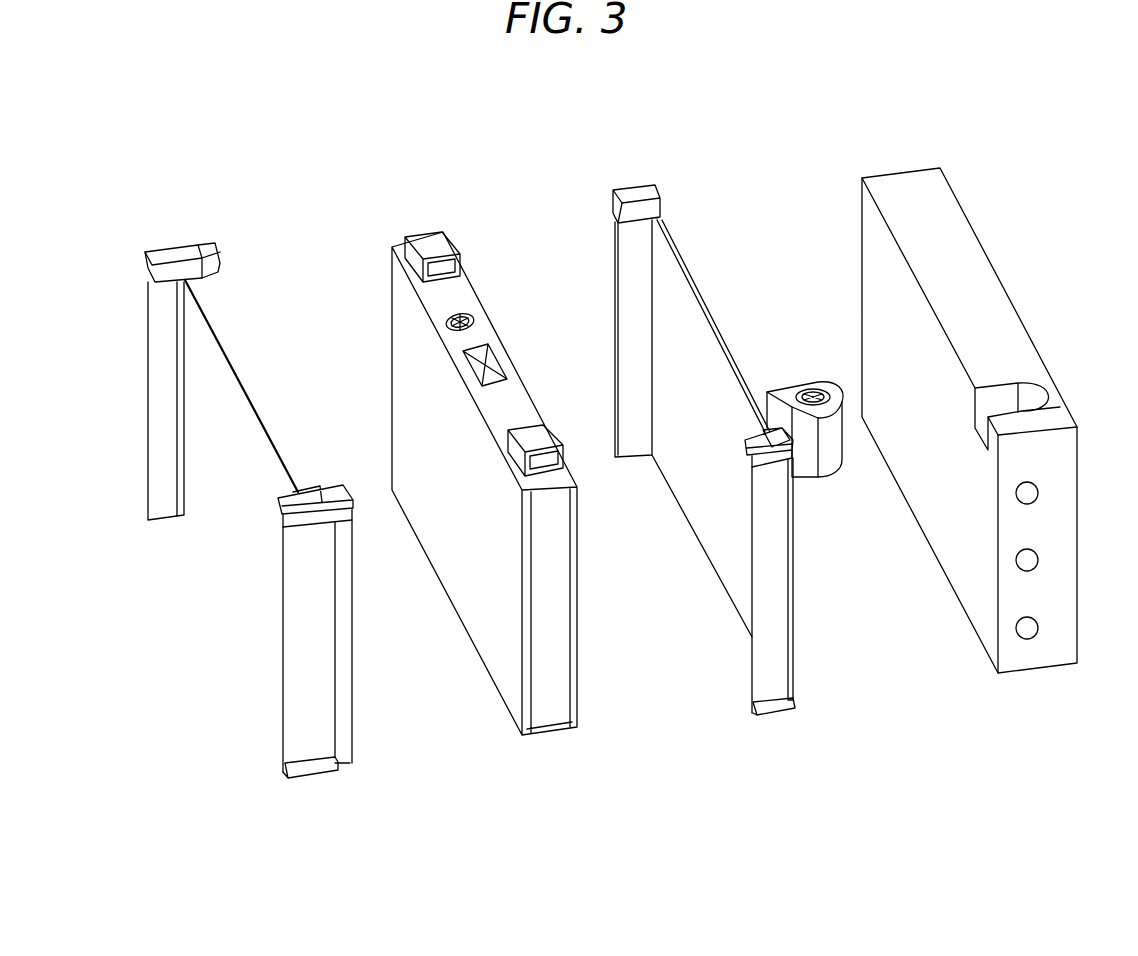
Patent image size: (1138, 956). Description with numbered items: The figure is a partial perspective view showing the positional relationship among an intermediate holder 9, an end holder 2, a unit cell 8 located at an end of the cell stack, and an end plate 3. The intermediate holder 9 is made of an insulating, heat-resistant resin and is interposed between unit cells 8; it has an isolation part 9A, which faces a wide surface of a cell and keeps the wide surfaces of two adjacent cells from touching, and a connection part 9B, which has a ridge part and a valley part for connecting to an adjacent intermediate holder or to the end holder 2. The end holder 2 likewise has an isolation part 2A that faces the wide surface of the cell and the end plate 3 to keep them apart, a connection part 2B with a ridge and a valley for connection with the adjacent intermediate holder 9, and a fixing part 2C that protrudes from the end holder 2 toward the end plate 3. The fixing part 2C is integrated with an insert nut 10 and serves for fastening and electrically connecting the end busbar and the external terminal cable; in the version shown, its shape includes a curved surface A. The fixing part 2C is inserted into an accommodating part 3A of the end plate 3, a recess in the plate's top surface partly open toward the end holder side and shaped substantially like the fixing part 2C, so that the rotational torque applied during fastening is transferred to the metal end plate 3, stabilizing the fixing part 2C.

The end holder 2 is at (702, 162).
The isolation part 2A is at (705, 508).
The connection part 2B is at (772, 658).
The fixing part 2C is at (783, 395).
The end plate 3 is at (957, 145).
The accommodating part 3A is at (1002, 400).
The unit cell 8 is at (460, 188).
The intermediate holder 9 is at (238, 205).
The isolation part 9A is at (224, 483).
The connection part 9B is at (298, 660).
The insert nut 10 is at (815, 395).
The curved surface A is at (830, 453).